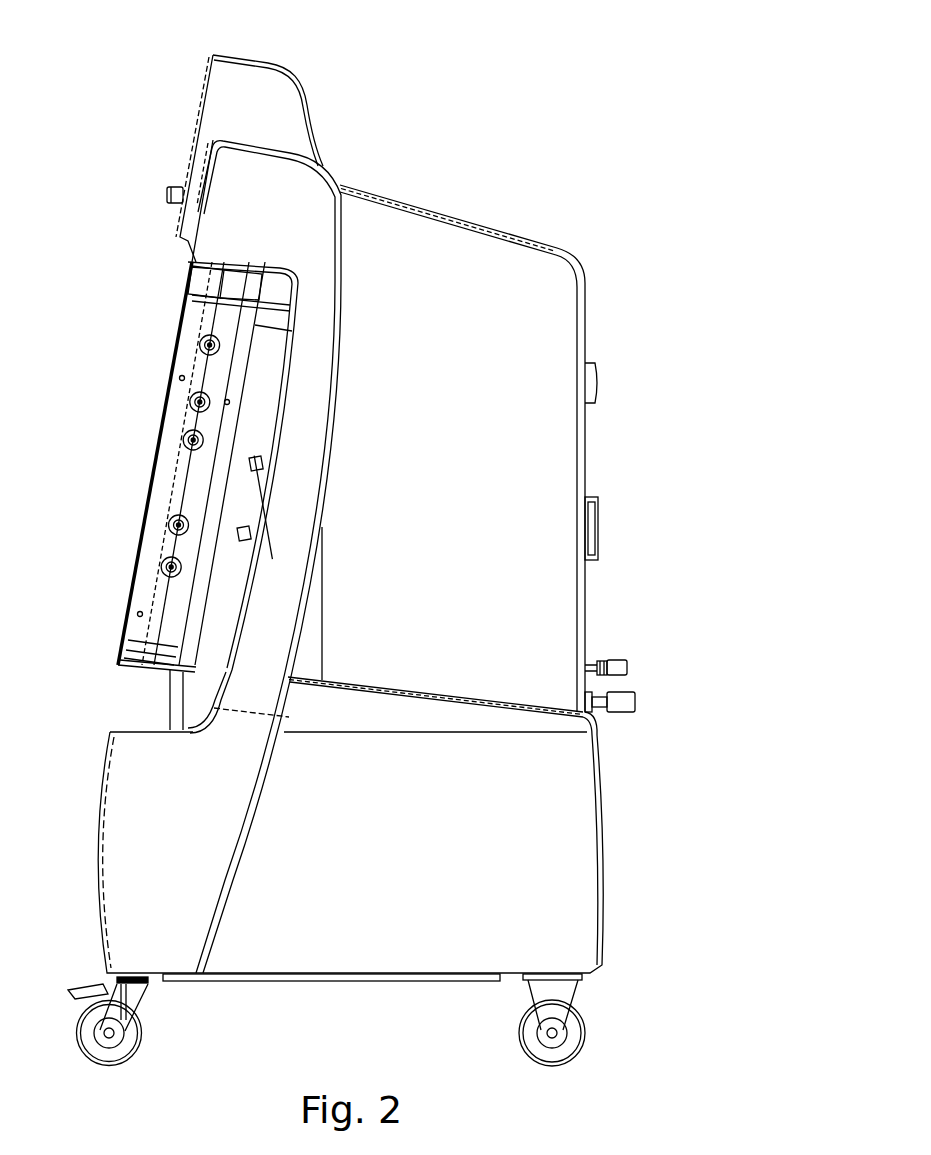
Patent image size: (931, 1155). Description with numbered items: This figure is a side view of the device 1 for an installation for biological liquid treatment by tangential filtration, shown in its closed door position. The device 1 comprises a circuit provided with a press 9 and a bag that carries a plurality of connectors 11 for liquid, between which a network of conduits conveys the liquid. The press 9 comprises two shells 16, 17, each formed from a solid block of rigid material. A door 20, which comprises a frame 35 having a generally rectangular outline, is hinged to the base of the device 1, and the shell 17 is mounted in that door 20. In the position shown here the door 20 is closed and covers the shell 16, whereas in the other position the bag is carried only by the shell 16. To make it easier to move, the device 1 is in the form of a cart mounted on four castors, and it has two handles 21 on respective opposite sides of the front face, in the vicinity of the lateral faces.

The device 1 is at (593, 112).
The press 9 is at (148, 583).
The connectors 11 is at (192, 440).
The shell 16 is at (190, 500).
The shell 17 is at (165, 483).
The door 20 is at (187, 323).
The handles 21 is at (183, 695).
The frame 35 is at (197, 281).